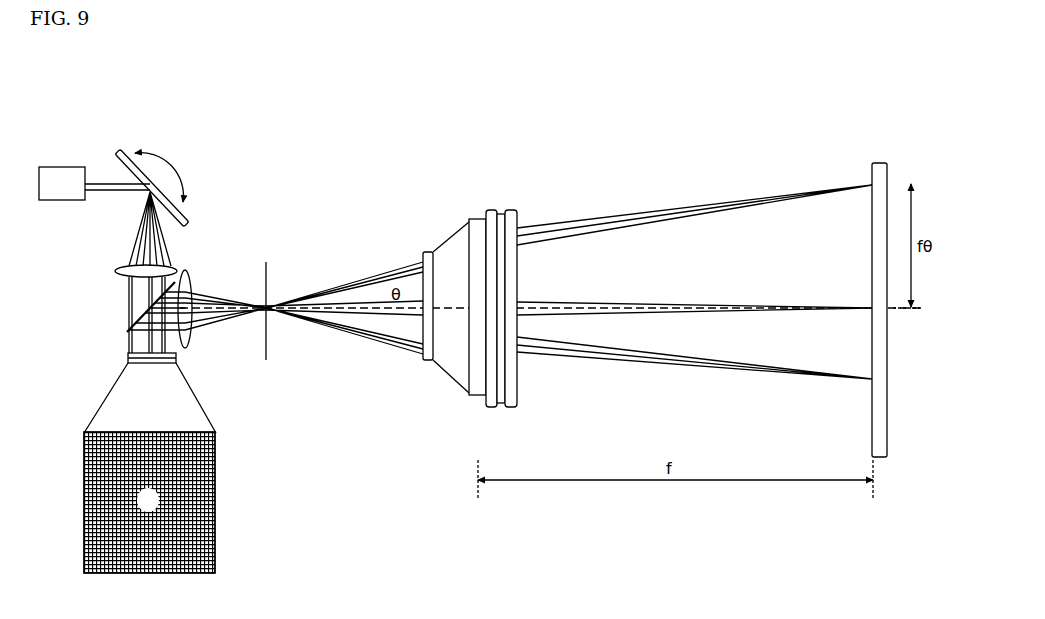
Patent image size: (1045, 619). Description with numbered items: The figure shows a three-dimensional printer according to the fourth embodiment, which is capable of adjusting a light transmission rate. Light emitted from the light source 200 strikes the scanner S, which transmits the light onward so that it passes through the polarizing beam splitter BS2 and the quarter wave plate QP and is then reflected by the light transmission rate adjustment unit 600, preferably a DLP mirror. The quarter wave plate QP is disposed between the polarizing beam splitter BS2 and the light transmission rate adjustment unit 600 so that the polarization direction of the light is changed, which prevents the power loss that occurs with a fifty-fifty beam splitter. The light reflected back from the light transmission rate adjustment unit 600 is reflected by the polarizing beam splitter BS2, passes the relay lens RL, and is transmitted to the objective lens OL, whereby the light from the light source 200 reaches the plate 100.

The light source 200 is at (70, 166).
The scanner S is at (183, 210).
The relay lens RL is at (185, 268).
The polarizing beam splitter BS2 is at (128, 321).
The quarter wave plate QP is at (128, 353).
The light transmission rate adjustment unit 600 is at (173, 362).
The objective lens OL is at (478, 219).
The plate 100 is at (880, 162).